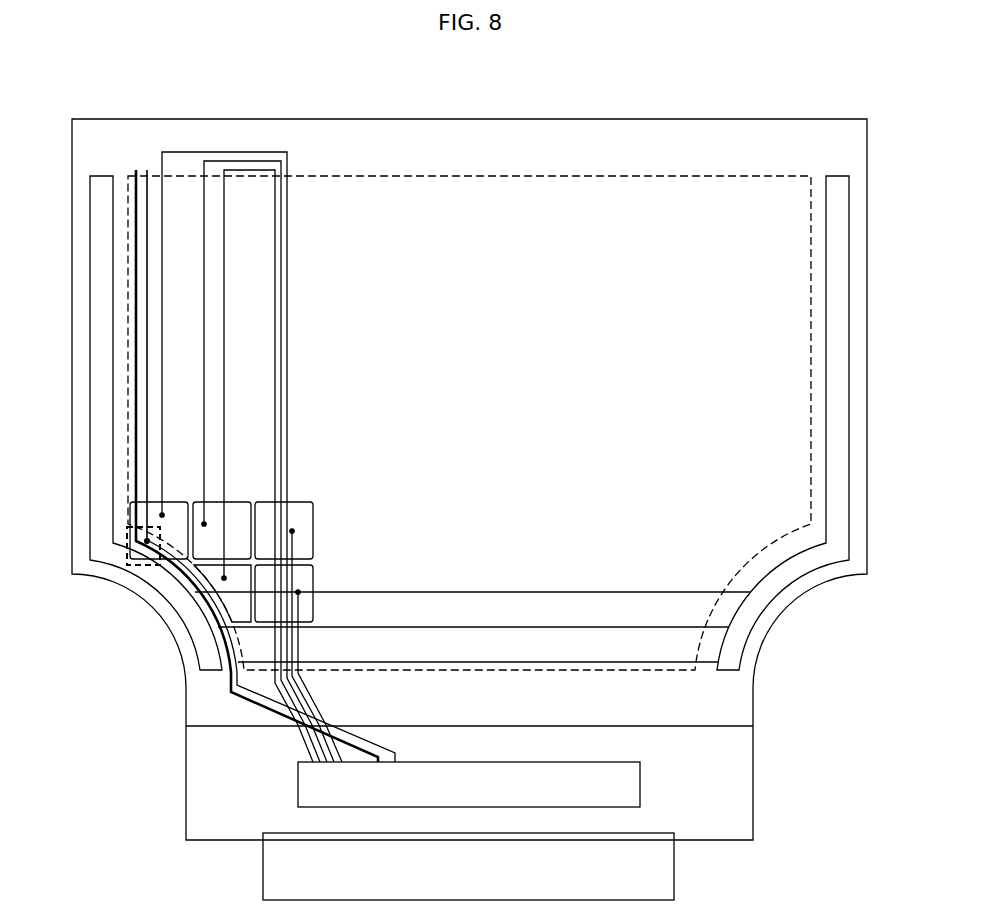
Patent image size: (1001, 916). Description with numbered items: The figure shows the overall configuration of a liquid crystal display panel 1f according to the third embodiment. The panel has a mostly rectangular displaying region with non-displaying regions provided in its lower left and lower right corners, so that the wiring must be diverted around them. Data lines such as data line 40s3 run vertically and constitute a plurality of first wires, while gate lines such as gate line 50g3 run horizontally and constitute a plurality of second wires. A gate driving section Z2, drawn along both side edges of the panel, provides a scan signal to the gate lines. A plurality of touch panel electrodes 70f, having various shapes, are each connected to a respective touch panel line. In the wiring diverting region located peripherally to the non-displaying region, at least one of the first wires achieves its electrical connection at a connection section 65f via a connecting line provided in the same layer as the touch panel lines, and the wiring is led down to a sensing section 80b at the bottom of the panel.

The liquid crystal display panel 1f is at (752, 105).
The gate driving section Z2 is at (100, 290).
The data line 40s3 is at (128, 176).
The gate line 50g3 is at (665, 592).
The connection section 65f is at (125, 553).
The touch panel electrode 70f is at (175, 508).
The sensing section 80b is at (628, 784).